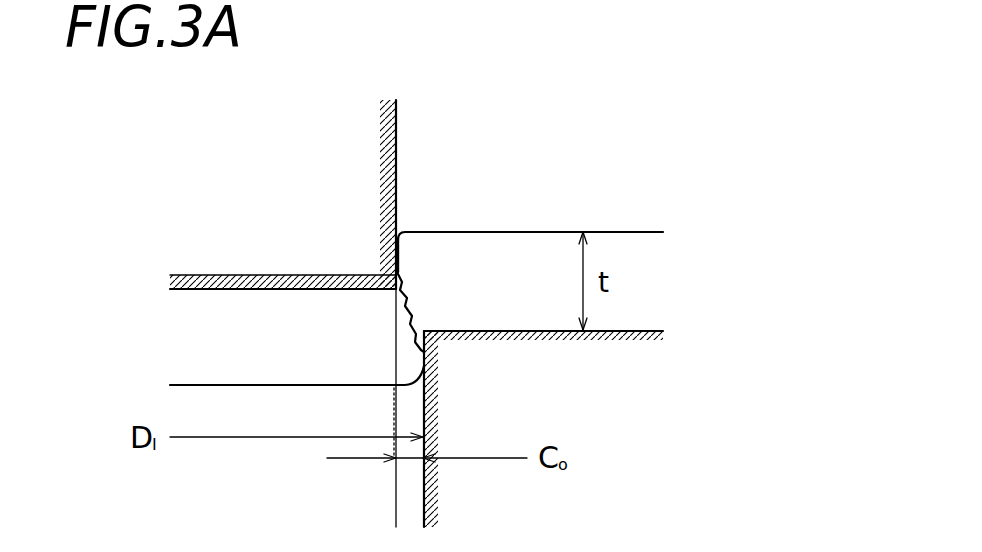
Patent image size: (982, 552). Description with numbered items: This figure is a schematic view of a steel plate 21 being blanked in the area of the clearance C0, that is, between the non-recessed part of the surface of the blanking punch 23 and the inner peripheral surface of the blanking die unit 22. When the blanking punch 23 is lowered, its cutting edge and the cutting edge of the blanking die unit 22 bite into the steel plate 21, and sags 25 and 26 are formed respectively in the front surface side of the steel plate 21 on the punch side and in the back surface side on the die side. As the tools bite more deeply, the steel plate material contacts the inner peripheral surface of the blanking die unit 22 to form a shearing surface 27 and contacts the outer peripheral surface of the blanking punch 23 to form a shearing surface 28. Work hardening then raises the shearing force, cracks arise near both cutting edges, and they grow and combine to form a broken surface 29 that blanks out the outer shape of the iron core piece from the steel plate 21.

The steel plate 21 is at (548, 230).
The blanking die unit 22 is at (640, 391).
The blanking punch 23 is at (263, 176).
The sag 25 is at (398, 236).
The sag 26 is at (437, 387).
The shearing surface 27 is at (425, 363).
The shearing surface 28 is at (391, 256).
The broken surface 29 is at (416, 304).